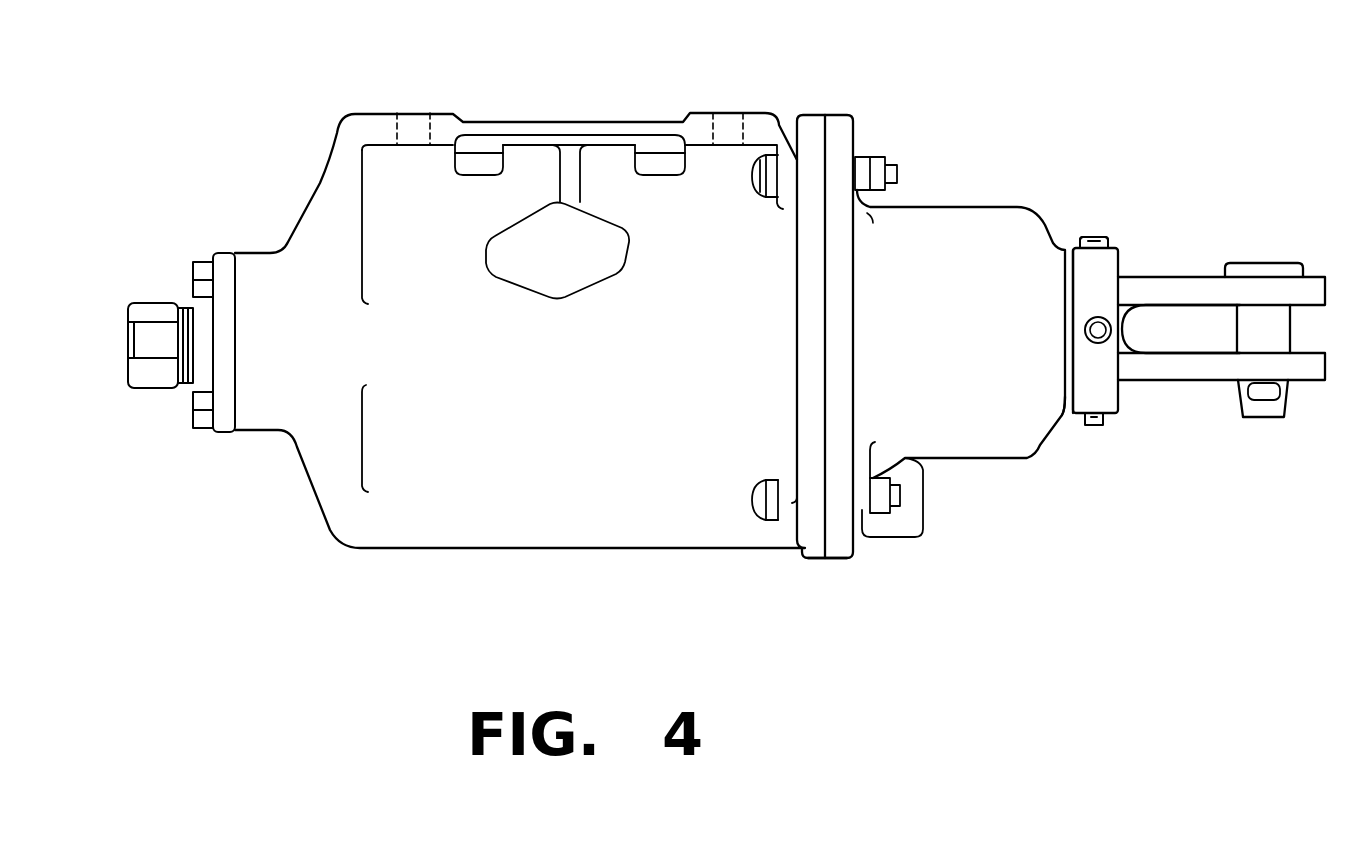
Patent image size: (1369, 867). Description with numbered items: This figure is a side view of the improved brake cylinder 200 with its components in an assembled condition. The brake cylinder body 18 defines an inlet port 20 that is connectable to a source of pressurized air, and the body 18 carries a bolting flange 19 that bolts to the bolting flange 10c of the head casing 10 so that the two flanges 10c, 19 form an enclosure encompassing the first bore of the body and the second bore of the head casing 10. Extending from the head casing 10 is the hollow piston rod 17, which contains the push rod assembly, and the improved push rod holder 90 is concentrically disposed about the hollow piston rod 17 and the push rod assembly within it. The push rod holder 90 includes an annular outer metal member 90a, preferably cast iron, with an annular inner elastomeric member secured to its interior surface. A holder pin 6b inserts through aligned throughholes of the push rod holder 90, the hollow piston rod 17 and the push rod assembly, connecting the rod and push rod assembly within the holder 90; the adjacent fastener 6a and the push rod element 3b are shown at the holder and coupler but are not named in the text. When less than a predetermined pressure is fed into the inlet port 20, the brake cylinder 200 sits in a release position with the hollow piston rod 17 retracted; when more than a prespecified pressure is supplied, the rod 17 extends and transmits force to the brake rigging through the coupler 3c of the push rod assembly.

The improved brake cylinder 200 is at (350, 570).
The brake cylinder body 18 is at (322, 185).
The inlet port 20 is at (155, 378).
The bolting flange 10c is at (832, 142).
The bolting flange 19 is at (822, 537).
The head casing 10 is at (992, 213).
The hollow piston rod 17 is at (1066, 392).
The improved push rod holder 90 is at (1105, 398).
The annular outer metal member 90a is at (1068, 250).
The bolt nut 6a is at (1102, 238).
The holder pin 6b is at (1098, 327).
The clevis pin head 3b is at (1277, 265).
The coupler 3c is at (1273, 367).